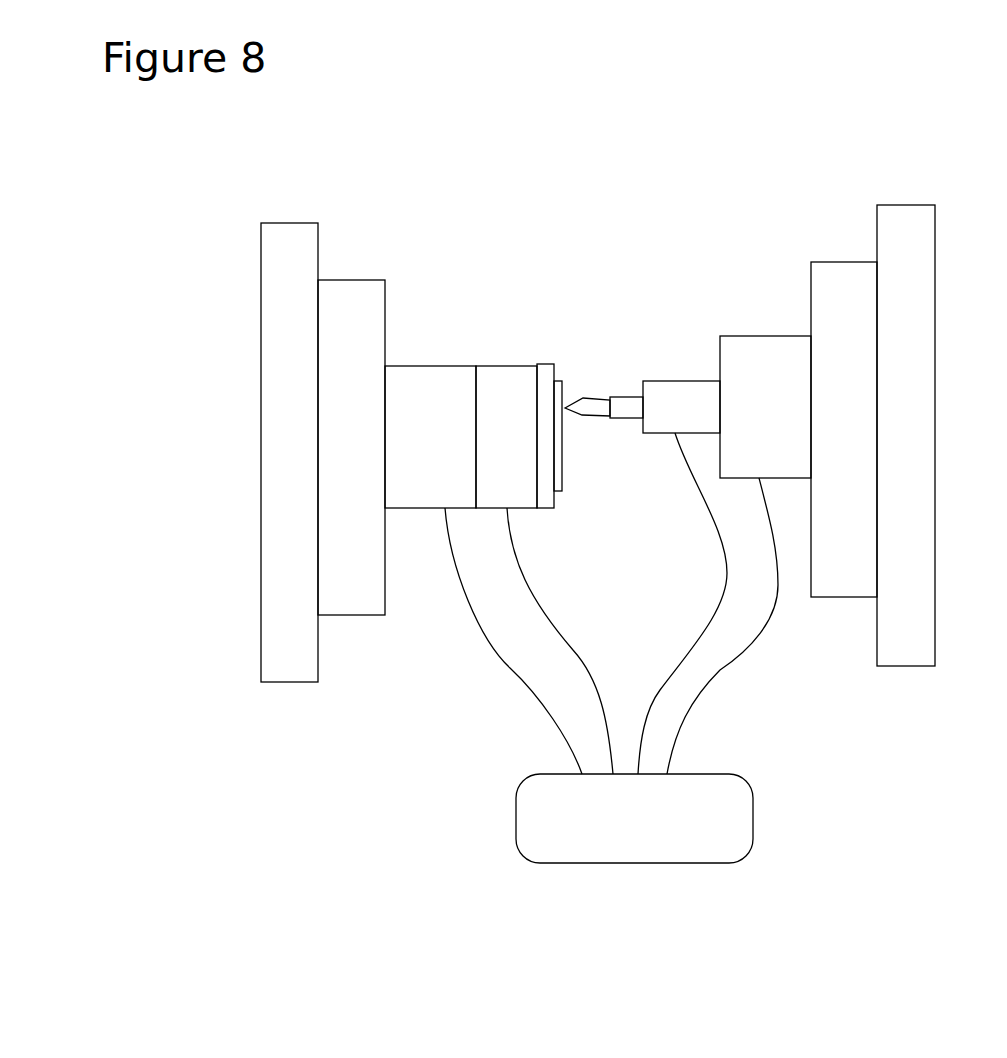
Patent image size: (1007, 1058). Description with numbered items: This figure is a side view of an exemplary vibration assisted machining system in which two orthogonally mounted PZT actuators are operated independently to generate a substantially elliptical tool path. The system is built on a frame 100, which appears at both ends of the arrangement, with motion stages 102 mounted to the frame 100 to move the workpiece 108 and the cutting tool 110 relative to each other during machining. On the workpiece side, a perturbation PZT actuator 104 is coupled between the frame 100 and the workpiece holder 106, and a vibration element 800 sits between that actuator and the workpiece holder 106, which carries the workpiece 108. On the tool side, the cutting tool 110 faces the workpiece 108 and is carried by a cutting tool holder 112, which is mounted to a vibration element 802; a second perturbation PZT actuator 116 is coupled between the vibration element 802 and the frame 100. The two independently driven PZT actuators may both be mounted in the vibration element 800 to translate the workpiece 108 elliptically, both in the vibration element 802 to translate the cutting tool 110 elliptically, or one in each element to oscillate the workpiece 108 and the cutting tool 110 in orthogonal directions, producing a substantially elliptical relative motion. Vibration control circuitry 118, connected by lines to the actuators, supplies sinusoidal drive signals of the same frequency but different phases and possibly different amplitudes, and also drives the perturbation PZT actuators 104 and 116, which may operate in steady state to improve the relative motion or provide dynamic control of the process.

The frame 100 is at (262, 630).
The motion stages 102 is at (356, 280).
The perturbation PZT actuator 104 is at (413, 508).
The vibration element 800 is at (498, 366).
The workpiece holder 106 is at (547, 364).
The workpiece 108 is at (560, 470).
The cutting tool 110 is at (587, 398).
The cutting tool holder 112 is at (627, 418).
The vibration element 802 is at (683, 381).
The perturbation PZT actuator 116 is at (749, 336).
The vibration control circuitry 118 is at (750, 840).